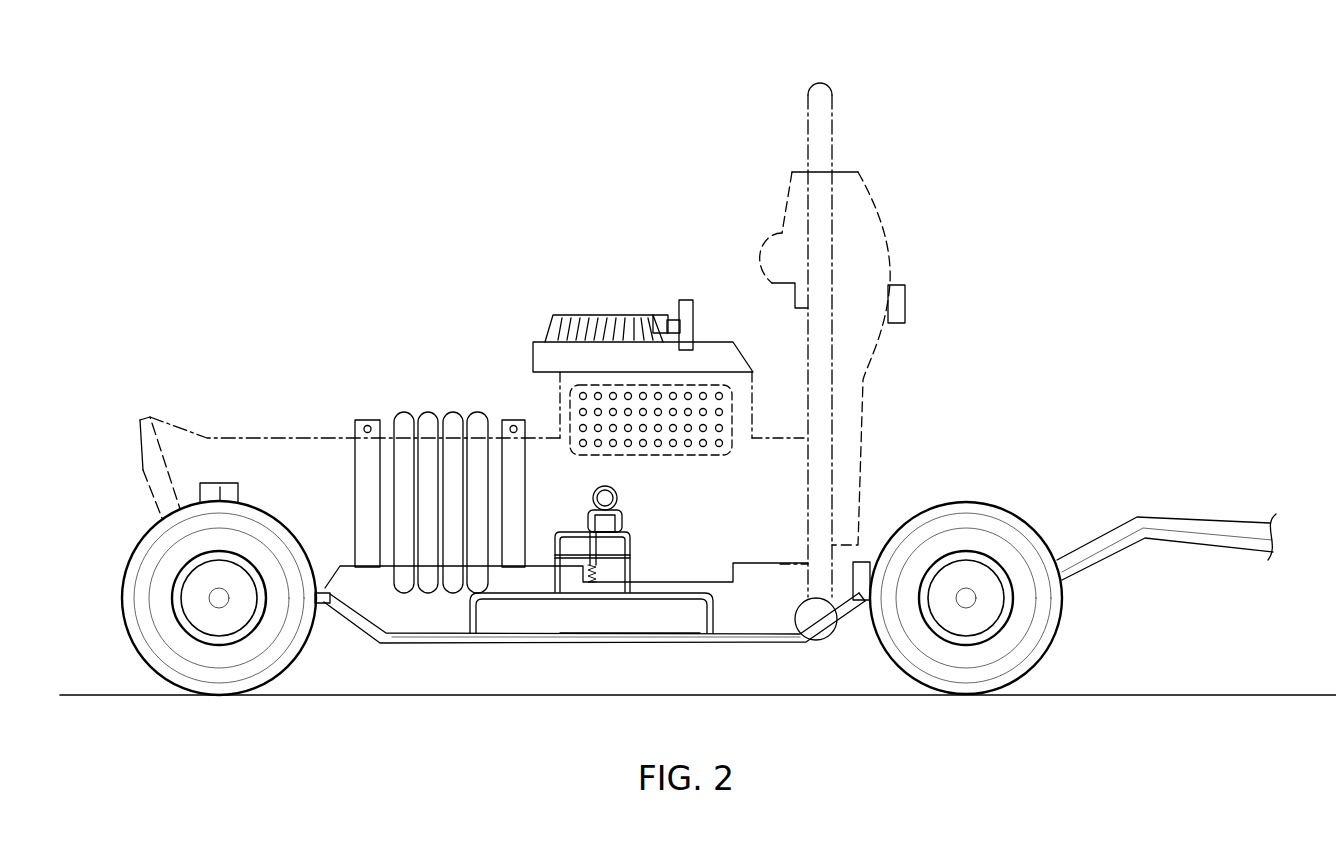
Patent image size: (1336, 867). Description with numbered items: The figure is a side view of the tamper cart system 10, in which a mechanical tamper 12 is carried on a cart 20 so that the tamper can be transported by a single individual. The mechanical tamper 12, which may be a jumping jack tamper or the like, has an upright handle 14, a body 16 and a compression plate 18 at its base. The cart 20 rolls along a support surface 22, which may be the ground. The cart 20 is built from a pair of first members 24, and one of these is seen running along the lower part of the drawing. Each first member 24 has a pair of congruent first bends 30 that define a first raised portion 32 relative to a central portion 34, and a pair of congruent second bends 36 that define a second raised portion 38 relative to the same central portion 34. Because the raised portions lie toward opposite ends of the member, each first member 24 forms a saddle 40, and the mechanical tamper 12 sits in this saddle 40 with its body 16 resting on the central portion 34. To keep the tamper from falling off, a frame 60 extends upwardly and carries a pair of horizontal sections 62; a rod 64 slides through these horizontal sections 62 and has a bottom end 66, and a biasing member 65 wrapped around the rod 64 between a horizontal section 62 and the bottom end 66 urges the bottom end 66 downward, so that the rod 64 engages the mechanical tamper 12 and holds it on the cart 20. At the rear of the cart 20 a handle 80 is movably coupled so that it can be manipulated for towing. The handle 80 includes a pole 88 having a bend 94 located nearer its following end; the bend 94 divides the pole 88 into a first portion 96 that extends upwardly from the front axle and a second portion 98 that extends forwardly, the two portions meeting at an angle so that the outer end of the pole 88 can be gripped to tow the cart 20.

The tamper cart system 10 is at (448, 158).
The mechanical tamper 12 is at (485, 328).
The handle 14 is at (832, 235).
The body 16 is at (540, 437).
The compression plate 18 is at (145, 442).
The cart 20 is at (985, 458).
The support surface 22 is at (1235, 695).
The first members 24 is at (428, 645).
The first bends 30 is at (380, 647).
The first raised portion 32 is at (335, 740).
The central portion 34 is at (583, 645).
The second bends 36 is at (803, 640).
The second raised portion 38 is at (830, 723).
The saddle 40 is at (498, 620).
The frame 60 is at (628, 558).
The horizontal sections 62 is at (567, 535).
The rod 64 is at (595, 547).
The biasing member 65 is at (597, 568).
The bottom end 66 is at (592, 582).
The handle 80 is at (1177, 478).
The pole 88 is at (1208, 520).
The bend 94 is at (1122, 520).
The first portion 96 is at (1077, 548).
The second portion 98 is at (1248, 525).